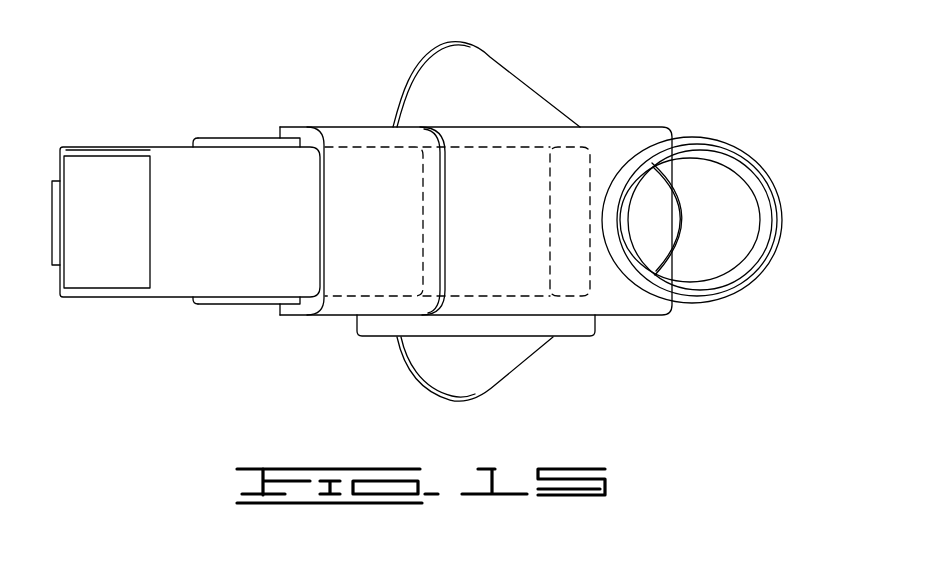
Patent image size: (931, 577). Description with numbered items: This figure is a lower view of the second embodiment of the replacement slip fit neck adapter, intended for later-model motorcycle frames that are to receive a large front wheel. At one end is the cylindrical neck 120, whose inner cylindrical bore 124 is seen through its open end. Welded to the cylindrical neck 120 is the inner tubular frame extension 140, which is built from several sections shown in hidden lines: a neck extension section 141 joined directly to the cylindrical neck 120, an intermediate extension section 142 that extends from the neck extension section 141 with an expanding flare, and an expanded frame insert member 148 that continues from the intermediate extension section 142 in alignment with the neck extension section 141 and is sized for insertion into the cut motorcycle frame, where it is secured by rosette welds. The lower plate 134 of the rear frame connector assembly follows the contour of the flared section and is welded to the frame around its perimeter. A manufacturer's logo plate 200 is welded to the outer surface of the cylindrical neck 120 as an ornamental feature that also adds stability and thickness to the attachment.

The cylindrical neck 120 is at (728, 143).
The inner cylindrical bore 124 is at (662, 232).
The lower plate 134 is at (370, 157).
The inner tubular frame extension 140 is at (348, 273).
The neck extension section 141 is at (580, 278).
The intermediate extension section 142 is at (490, 273).
The expanded frame insert member 148 is at (181, 280).
The manufacturer's logo plate 200 is at (483, 80).